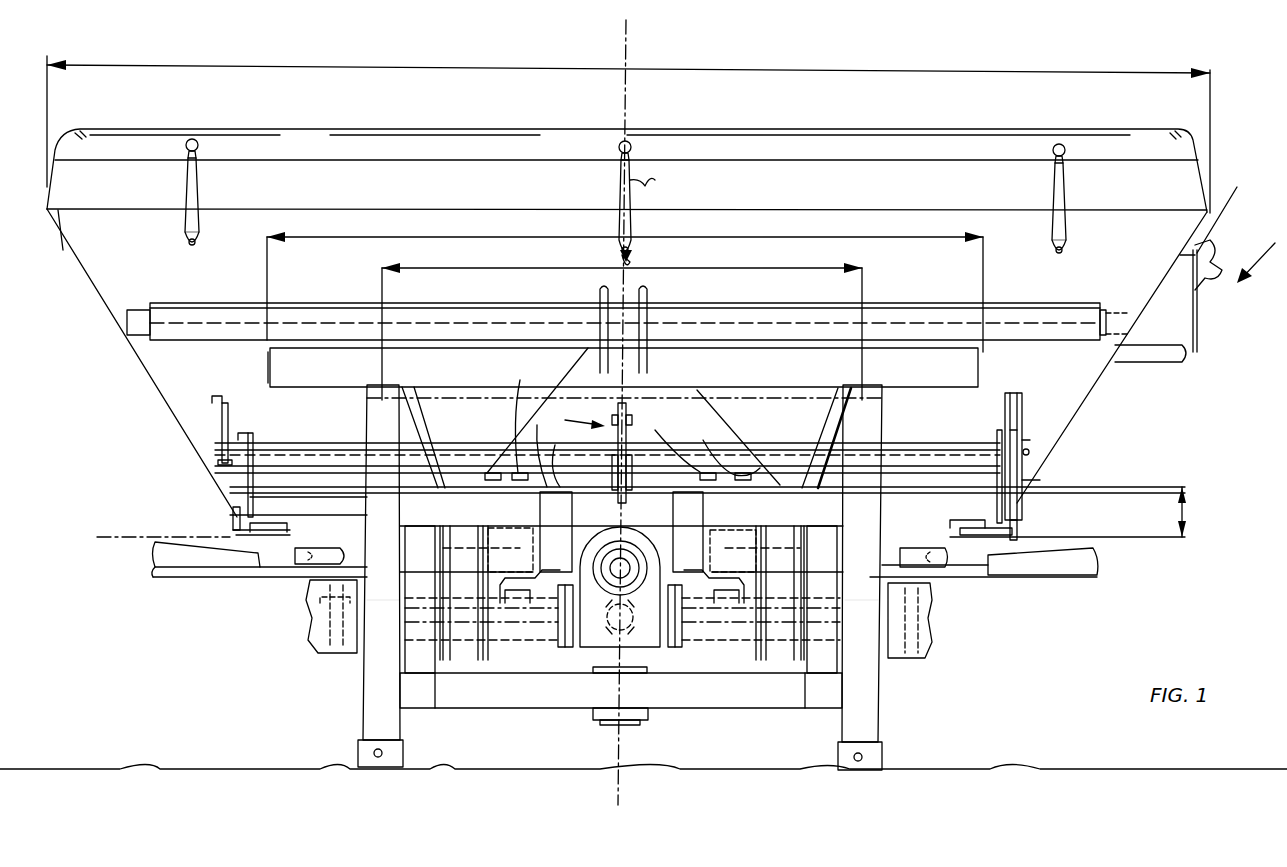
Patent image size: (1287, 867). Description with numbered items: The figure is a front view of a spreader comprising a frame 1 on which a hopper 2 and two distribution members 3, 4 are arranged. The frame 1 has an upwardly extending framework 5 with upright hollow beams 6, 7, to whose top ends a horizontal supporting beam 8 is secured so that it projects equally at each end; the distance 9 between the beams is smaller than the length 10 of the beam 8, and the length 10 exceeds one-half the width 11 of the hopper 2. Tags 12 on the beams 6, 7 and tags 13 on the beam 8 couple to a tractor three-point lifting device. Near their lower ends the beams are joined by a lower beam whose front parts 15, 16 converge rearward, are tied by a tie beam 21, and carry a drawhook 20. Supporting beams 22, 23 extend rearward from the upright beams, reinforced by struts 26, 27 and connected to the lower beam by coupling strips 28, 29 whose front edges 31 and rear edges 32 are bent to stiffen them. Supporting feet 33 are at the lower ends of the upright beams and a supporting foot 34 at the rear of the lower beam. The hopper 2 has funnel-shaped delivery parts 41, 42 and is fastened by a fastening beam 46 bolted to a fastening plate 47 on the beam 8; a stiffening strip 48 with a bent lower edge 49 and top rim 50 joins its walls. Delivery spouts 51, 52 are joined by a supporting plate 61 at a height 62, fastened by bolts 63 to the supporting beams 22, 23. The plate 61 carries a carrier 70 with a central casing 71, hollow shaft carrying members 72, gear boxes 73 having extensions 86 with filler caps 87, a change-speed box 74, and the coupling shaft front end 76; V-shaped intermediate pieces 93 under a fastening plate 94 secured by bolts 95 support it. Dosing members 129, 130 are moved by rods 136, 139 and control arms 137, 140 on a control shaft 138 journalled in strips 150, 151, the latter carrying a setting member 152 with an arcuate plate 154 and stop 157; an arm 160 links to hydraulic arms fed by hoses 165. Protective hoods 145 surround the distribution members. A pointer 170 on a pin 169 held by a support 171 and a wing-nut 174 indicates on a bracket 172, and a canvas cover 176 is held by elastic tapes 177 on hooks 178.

The frame 1 is at (355, 713).
The hopper 2 is at (110, 256).
The distribution member 3 is at (150, 583).
The distribution member 4 is at (1105, 572).
The framework 5 is at (865, 719).
The upright hollow beam 6 is at (378, 722).
The upright hollow beam 7 is at (845, 725).
The horizontal supporting beam 8 is at (318, 372).
The distance 9 is at (622, 321).
The length 10 is at (625, 281).
The width 11 is at (628, 127).
The tag 12 is at (405, 652).
The tag 13 is at (610, 292).
The front part 15 is at (420, 700).
The front part 16 is at (818, 710).
The drawhook 20 is at (605, 678).
The tie beam 21 is at (705, 712).
The supporting beam 22 is at (366, 494).
The supporting beam 23 is at (880, 563).
The strut 26 is at (422, 428).
The strut 27 is at (836, 412).
The coupling strip 28 is at (462, 668).
The coupling strip 29 is at (790, 668).
The front edge 31 is at (623, 598).
The rear edge 32 is at (470, 660).
The supporting foot 33 is at (368, 768).
The supporting foot 34 is at (622, 728).
The delivery part 41 is at (185, 393).
The delivery part 42 is at (1078, 366).
The fastening beam 46 is at (305, 318).
The fastening plate 47 is at (485, 350).
The stiffening strip 48 is at (615, 195).
The lower edge 49 is at (636, 258).
The top rim 50 is at (652, 183).
The delivery spout 51 is at (228, 480).
The delivery spout 52 is at (1030, 485).
The supporting plate 61 is at (710, 462).
The height 62 is at (1178, 512).
The bolt 63 is at (520, 420).
The carrier 70 is at (728, 630).
The central casing 71 is at (580, 580).
The hollow shaft carrying member 72 is at (550, 630).
The gear box 73 is at (318, 655).
The change-speed box 74 is at (535, 668).
The front end 76 is at (600, 508).
The extension 86 is at (300, 625).
The filler cap 87 is at (296, 612).
The intermediate piece 93 is at (562, 500).
The fastening plate 94 is at (537, 450).
The bolt 95 is at (600, 419).
The dosing member 129 is at (285, 503).
The dosing member 130 is at (950, 540).
The rod 136 is at (232, 514).
The control arm 137 is at (253, 436).
The control shaft 138 is at (320, 442).
The rod 139 is at (1022, 525).
The control arm 140 is at (996, 440).
The protective hood 145 is at (497, 532).
The strip 150 is at (218, 402).
The strip 151 is at (1005, 410).
The setting member 152 is at (1060, 392).
The arcuate plate 154 is at (1032, 432).
The stop 157 is at (1030, 453).
The arm 160 is at (622, 403).
The hose 165 is at (579, 430).
The pin 169 is at (1215, 258).
The pointer 170 is at (1200, 312).
The support 171 is at (1178, 258).
The bracket 172 is at (1145, 352).
The wing-nut 174 is at (1230, 212).
The canvas cover 176 is at (395, 148).
The elastic tape 177 is at (186, 188).
The hook 178 is at (186, 247).